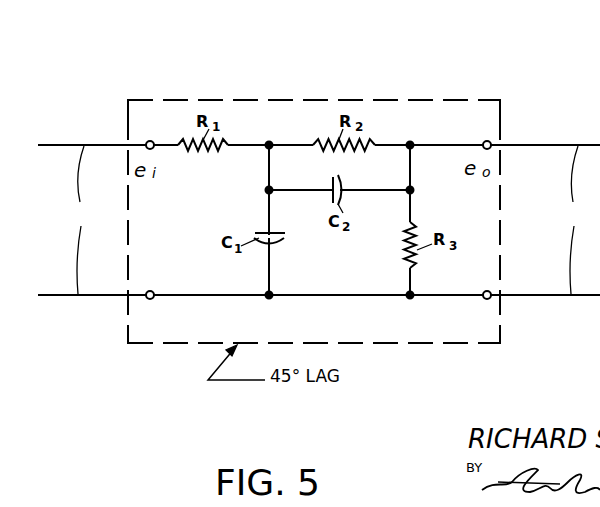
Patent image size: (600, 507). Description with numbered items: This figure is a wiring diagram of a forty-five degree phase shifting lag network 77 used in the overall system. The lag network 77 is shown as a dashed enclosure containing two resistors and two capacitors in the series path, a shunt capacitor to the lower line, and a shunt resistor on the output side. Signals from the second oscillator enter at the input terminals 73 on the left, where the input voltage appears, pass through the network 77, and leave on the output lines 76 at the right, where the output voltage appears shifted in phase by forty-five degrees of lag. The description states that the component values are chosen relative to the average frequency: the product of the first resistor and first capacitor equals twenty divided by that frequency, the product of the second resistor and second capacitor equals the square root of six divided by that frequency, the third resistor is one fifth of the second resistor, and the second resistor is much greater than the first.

The input terminals 73 is at (79, 220).
The output lines 76 is at (573, 220).
The forty-five degree lag network 77 is at (318, 100).